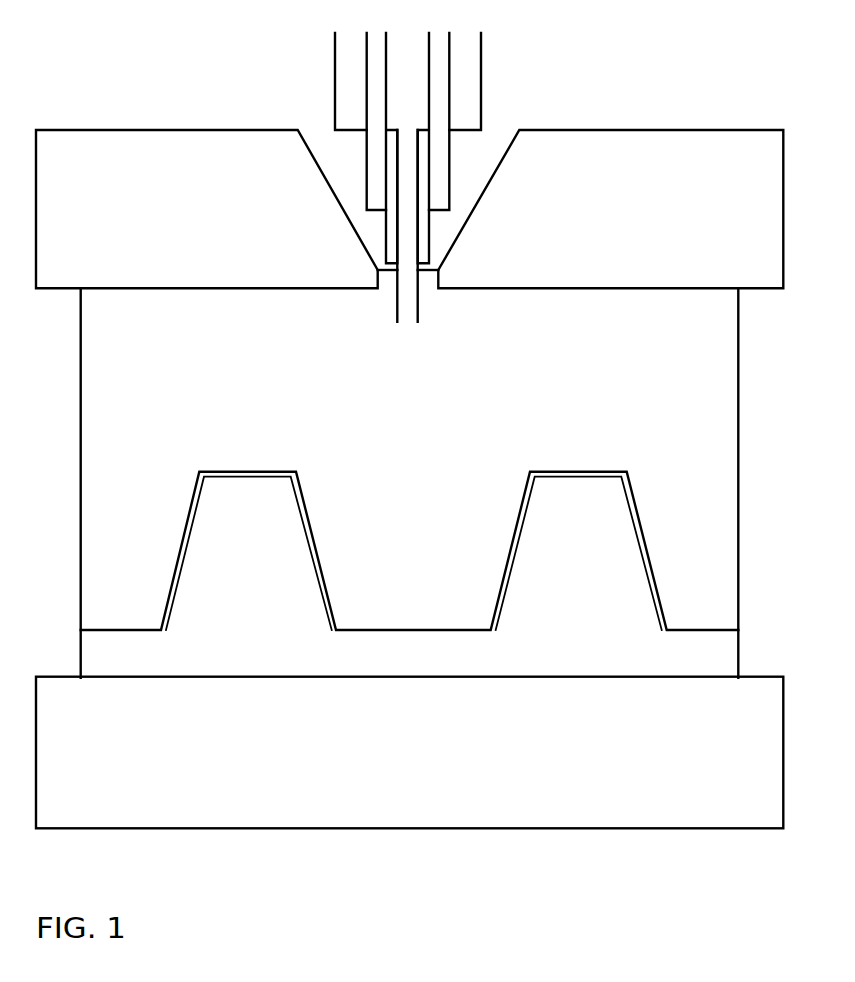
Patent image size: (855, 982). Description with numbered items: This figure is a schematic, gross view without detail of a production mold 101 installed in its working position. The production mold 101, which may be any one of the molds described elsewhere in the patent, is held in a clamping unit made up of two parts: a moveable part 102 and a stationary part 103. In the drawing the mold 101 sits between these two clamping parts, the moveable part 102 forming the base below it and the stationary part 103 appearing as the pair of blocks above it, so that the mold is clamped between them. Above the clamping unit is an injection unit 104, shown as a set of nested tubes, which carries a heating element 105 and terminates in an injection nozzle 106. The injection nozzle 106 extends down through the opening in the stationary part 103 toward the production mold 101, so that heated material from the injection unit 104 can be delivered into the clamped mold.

The production mold 101 is at (738, 602).
The moveable part 102 is at (409, 753).
The stationary part 103 is at (409, 209).
The injection unit 104 is at (437, 81).
The heating element 105 is at (467, 49).
The injection nozzle 106 is at (424, 246).